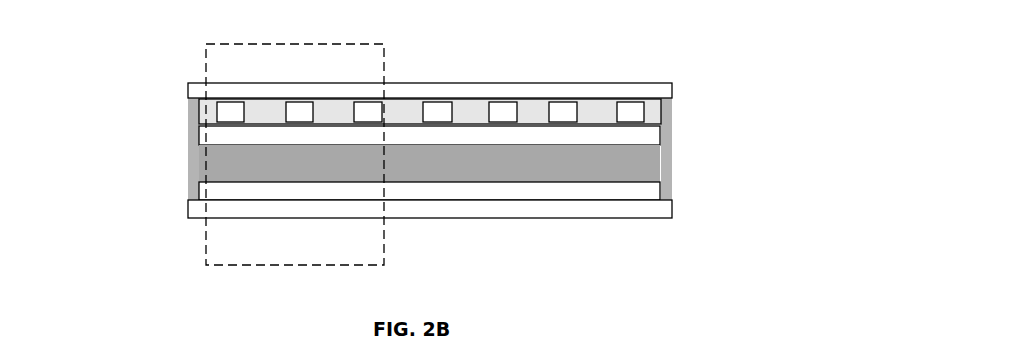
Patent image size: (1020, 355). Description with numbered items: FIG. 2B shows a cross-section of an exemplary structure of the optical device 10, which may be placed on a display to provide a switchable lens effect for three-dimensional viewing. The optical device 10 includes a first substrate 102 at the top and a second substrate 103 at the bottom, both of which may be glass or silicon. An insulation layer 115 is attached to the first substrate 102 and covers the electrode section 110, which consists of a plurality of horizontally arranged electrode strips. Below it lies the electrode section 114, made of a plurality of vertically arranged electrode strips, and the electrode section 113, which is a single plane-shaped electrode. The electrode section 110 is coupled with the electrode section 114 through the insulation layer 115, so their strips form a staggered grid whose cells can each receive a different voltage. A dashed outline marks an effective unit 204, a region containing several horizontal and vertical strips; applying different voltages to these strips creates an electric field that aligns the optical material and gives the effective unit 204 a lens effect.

The optical device 10 is at (638, 51).
The first substrate 102 is at (217, 92).
The second substrate 103 is at (223, 210).
The electrode section 110 is at (633, 112).
The electrode section 113 is at (638, 192).
The electrode section 114 is at (227, 132).
The insulation layer 115 is at (203, 115).
The effective unit 204 is at (237, 251).